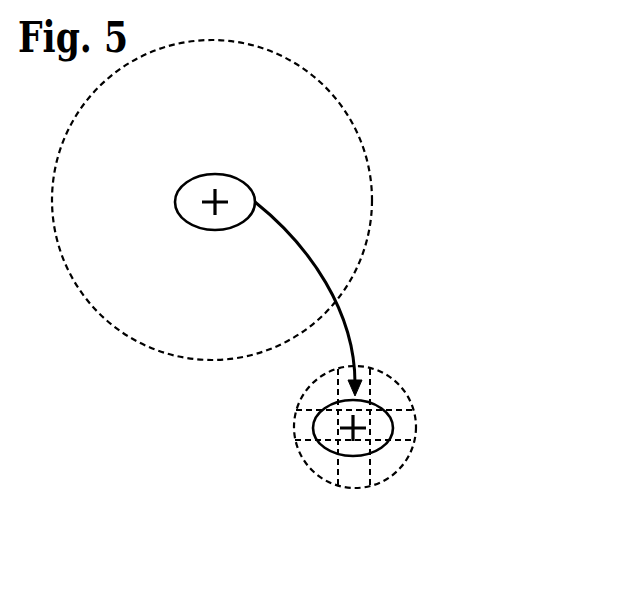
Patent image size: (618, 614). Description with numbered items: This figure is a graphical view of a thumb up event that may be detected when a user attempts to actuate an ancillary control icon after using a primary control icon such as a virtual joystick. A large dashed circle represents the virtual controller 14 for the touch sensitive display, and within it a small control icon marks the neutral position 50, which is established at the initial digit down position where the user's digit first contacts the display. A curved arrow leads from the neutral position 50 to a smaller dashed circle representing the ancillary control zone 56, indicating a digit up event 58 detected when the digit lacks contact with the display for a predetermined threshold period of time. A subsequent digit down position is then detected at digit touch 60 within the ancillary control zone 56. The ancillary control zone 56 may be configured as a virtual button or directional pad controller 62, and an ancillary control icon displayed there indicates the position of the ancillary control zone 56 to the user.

The virtual controller 14 is at (212, 196).
The neutral position 50 is at (215, 173).
The digit up event 58 is at (348, 338).
The ancillary control zone 56 is at (407, 380).
The directional pad (D-pad) controller 62 is at (313, 426).
The digit touch 60 is at (357, 458).